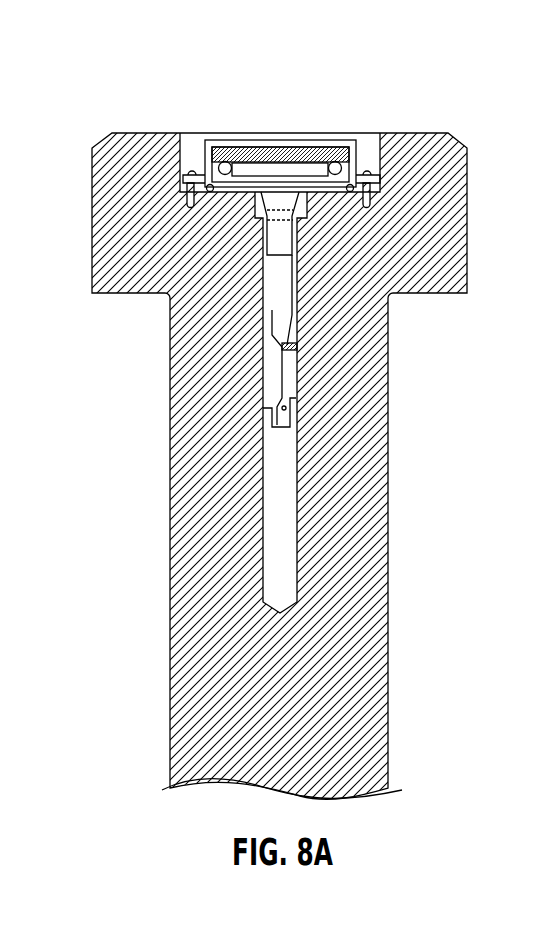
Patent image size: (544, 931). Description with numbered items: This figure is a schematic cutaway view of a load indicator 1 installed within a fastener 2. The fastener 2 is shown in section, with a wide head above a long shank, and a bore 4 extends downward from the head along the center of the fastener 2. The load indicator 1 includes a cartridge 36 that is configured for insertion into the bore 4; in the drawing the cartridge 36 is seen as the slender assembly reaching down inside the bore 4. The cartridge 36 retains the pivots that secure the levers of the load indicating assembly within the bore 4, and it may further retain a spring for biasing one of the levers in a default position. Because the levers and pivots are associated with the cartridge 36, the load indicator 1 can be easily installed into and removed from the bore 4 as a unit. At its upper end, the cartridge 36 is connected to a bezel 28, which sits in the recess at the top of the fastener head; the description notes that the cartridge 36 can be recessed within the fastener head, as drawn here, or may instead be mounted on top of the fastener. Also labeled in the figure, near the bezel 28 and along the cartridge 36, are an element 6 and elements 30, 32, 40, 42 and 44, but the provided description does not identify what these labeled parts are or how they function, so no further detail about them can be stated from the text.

The load indicator 1 is at (213, 134).
The fastener 2 is at (102, 141).
The bore 4 is at (272, 370).
The sensor tip contact 6 is at (296, 424).
The bezel 28 is at (338, 139).
The right retaining clip 30 is at (365, 169).
The left retaining clip 32 is at (186, 167).
The cartridge 36 is at (288, 316).
The adhesive layer 40 is at (308, 144).
The seal ring 42 is at (223, 160).
The substrate 44 is at (266, 170).